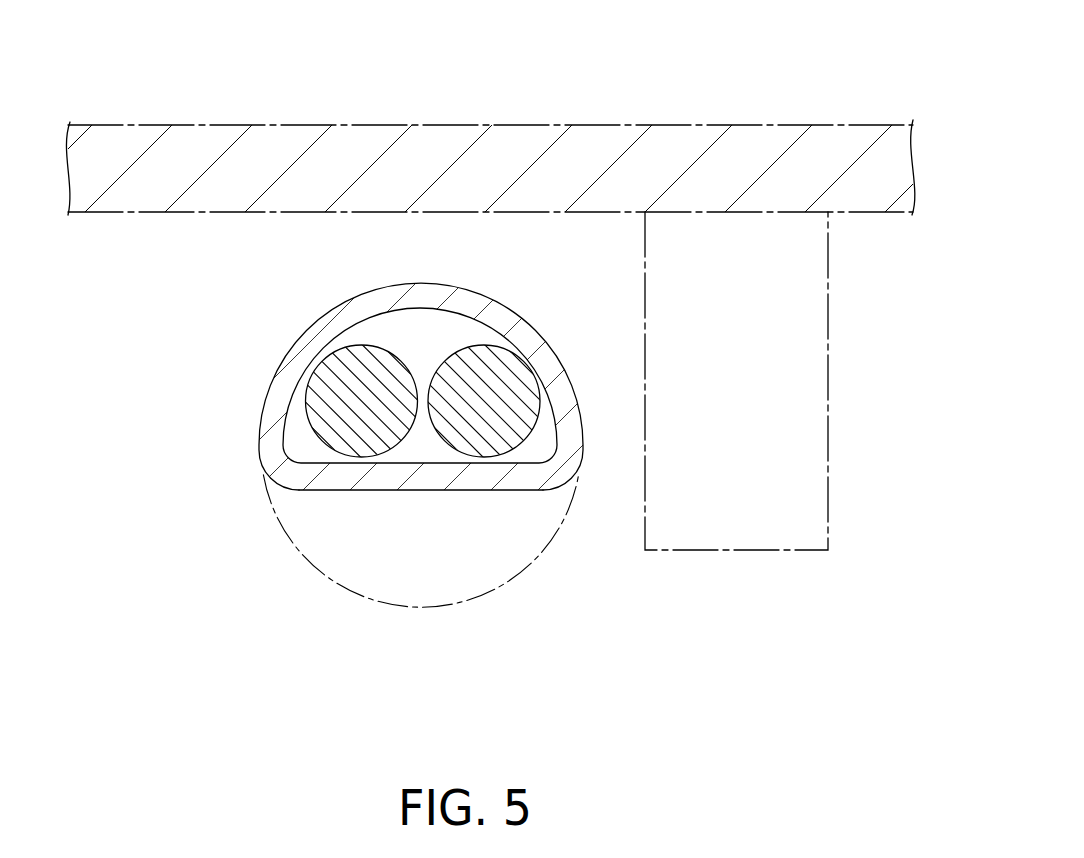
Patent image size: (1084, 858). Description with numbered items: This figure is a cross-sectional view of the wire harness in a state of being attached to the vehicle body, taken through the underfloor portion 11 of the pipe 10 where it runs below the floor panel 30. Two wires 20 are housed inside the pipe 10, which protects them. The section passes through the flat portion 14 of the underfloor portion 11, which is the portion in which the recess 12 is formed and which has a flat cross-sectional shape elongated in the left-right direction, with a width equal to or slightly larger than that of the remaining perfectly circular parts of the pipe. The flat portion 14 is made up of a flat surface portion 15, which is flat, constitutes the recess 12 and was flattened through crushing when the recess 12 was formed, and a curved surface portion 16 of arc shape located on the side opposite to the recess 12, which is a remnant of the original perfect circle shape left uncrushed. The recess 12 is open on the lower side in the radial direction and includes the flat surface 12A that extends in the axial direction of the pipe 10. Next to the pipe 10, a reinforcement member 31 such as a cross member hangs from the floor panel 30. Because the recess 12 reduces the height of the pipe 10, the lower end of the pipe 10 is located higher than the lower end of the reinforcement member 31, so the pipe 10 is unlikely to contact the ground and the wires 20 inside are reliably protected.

The pipe 10 is at (307, 337).
The underfloor portion 11 is at (278, 385).
The recess 12 is at (478, 490).
The flat surface 12A is at (425, 490).
The flat portion 14 is at (268, 417).
The flat surface portion 15 is at (387, 478).
The curved surface portion 16 is at (553, 362).
The wires 20 is at (473, 382).
The floor panel 30 is at (608, 147).
The reinforcement member 31 is at (802, 392).